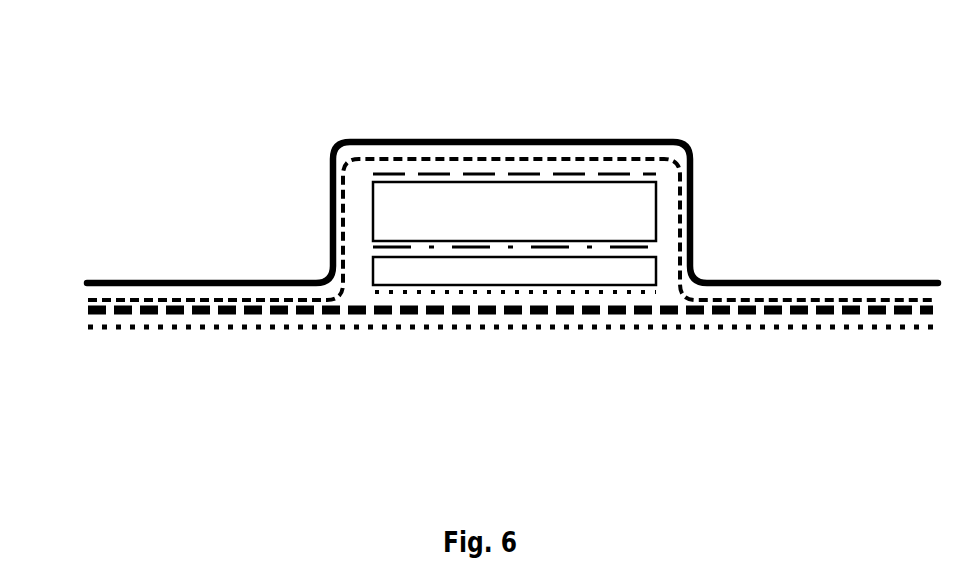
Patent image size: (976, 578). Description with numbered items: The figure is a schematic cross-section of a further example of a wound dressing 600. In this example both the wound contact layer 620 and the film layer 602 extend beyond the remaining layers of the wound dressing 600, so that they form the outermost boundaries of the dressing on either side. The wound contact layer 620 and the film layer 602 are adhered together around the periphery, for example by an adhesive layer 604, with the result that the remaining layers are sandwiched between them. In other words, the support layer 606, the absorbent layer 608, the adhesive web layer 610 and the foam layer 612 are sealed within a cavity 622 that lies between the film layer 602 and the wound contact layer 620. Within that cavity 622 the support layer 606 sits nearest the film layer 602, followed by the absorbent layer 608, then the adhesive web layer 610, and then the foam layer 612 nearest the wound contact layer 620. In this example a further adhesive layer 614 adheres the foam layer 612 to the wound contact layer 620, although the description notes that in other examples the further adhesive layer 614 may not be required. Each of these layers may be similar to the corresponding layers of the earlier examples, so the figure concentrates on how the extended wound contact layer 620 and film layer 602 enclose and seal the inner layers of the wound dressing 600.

The wound dressing 600 is at (320, 95).
The film layer 602 is at (660, 138).
The adhesive layer 604 is at (778, 298).
The support layer 606 is at (598, 175).
The absorbent layer 608 is at (633, 212).
The adhesive web layer 610 is at (372, 248).
The foam layer 612 is at (642, 268).
The further adhesive layer 614 is at (513, 292).
The wound contact layer 620 is at (82, 305).
The cavity 622 is at (357, 208).